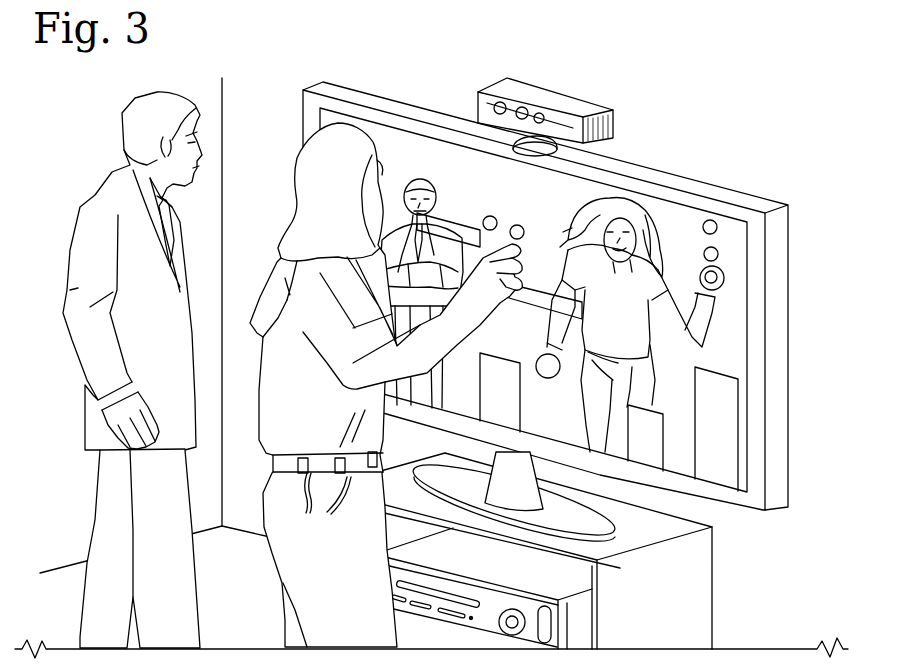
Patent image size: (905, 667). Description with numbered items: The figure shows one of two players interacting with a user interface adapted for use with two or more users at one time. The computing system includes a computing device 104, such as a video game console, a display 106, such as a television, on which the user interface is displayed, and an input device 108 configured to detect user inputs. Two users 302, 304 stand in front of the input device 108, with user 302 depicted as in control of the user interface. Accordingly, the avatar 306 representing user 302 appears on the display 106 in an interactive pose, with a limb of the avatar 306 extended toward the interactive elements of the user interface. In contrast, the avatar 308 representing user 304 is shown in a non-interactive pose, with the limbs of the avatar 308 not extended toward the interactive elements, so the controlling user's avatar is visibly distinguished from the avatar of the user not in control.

The computing device 104 is at (547, 585).
The display 106 is at (773, 320).
The input device 108 is at (580, 105).
The user 302 is at (308, 213).
The user 304 is at (88, 233).
The avatar 306 is at (638, 318).
The avatar 308 is at (442, 199).